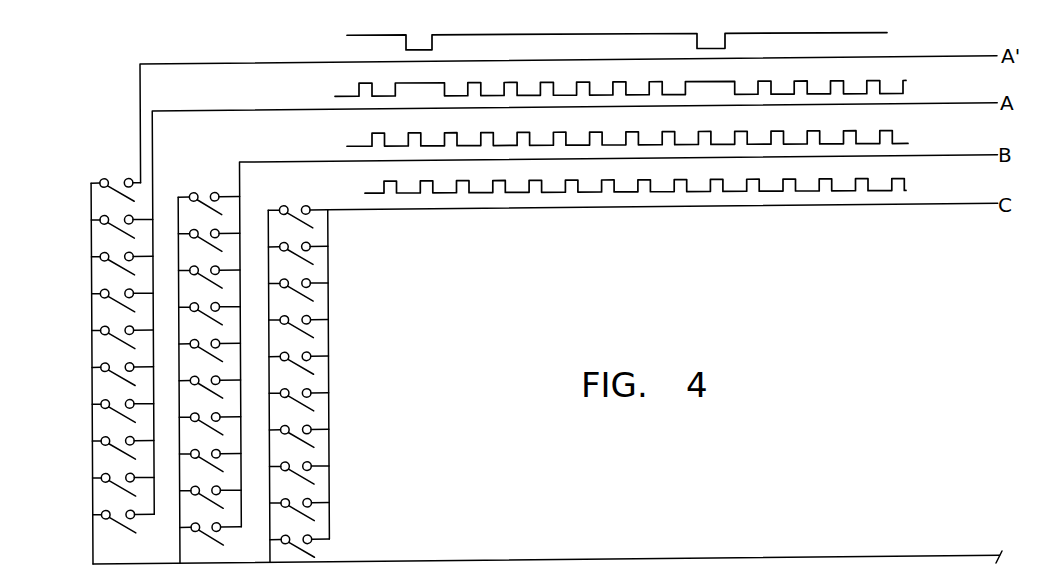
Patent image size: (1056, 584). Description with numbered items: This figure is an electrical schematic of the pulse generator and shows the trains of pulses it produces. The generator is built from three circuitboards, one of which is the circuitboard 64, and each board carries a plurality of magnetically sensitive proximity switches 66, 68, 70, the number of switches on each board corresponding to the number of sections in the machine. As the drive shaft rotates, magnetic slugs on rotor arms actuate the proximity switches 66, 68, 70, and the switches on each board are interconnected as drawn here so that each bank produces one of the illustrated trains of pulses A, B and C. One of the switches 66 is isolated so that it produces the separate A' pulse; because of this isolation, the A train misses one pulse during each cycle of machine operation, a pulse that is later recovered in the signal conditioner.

The circuitboard 64 is at (546, 569).
The proximity switches 66 is at (115, 177).
The proximity switches 68 is at (202, 190).
The proximity switches 70 is at (292, 203).